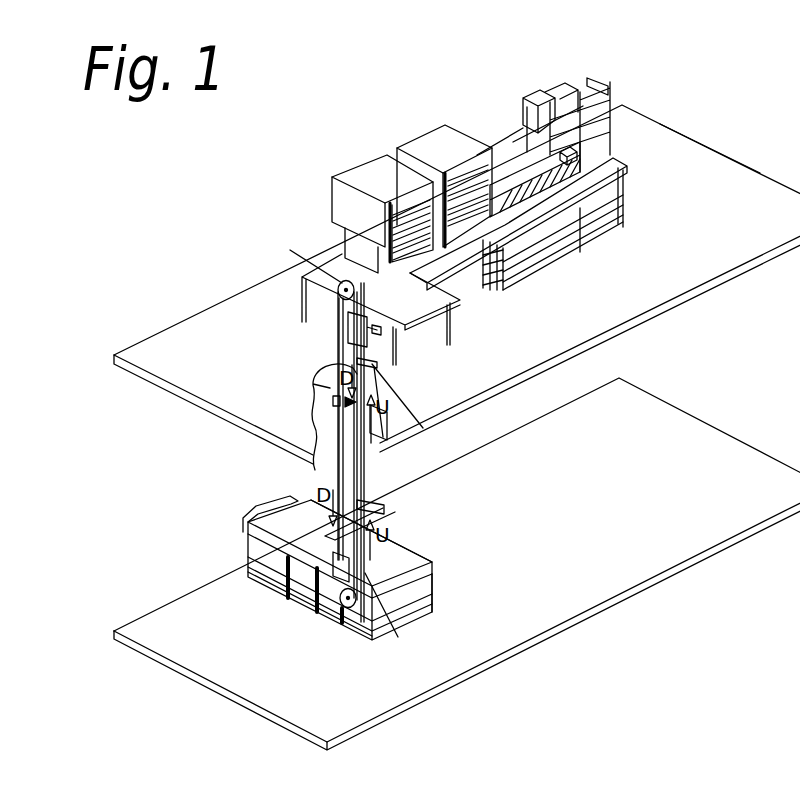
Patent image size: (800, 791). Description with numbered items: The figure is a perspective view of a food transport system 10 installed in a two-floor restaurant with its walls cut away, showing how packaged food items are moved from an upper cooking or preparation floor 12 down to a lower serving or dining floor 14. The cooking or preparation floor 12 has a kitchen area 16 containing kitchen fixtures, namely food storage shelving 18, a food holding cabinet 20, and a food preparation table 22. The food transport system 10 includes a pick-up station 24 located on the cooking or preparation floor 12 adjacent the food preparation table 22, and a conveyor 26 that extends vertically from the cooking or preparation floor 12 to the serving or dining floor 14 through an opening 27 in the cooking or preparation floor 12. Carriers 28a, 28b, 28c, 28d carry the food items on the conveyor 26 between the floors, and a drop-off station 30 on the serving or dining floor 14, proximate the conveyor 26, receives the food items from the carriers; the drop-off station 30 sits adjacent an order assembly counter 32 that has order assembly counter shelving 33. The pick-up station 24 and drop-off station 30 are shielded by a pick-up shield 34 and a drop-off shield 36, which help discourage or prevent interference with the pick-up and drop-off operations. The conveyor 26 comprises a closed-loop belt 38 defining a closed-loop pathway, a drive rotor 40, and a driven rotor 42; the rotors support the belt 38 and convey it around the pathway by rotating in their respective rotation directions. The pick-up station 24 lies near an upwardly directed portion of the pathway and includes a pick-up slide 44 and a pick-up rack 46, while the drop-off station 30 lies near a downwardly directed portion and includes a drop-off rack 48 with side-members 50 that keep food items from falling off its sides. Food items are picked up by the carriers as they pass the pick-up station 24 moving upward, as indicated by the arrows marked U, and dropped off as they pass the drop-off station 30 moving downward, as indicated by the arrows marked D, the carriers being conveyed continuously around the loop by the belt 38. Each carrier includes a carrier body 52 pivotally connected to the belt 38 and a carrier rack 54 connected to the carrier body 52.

The food transport system 10 is at (234, 351).
The cooking or preparation floor 12 is at (582, 316).
The serving or dining floor 14 is at (564, 560).
The kitchen area 16 is at (585, 268).
The food storage shelving 18 is at (704, 160).
The food holding cabinet 20 is at (470, 152).
The food preparation table 22 is at (409, 311).
The pick-up station 24 is at (415, 318).
The conveyor 26 is at (376, 483).
The opening 27 is at (327, 386).
The carrier 28a is at (388, 432).
The carrier 28b is at (340, 400).
The carrier 28c is at (272, 504).
The carrier 28d is at (386, 508).
The drop-off station 30 is at (386, 566).
The order assembly counter 32 is at (324, 533).
The order assembly counter shelving 33 is at (272, 570).
The pick-up shield 34 is at (355, 330).
The drop-off shield 36 is at (335, 574).
The belt 38 is at (364, 470).
The drive rotor 40 is at (290, 250).
The driven rotor 42 is at (347, 608).
The pick-up slide 44 is at (373, 305).
The pick-up rack 46 is at (382, 330).
The drop-off rack 48 is at (433, 595).
The side-members 50 is at (398, 637).
The carrier body 52 is at (380, 372).
The carrier rack 54 is at (378, 366).